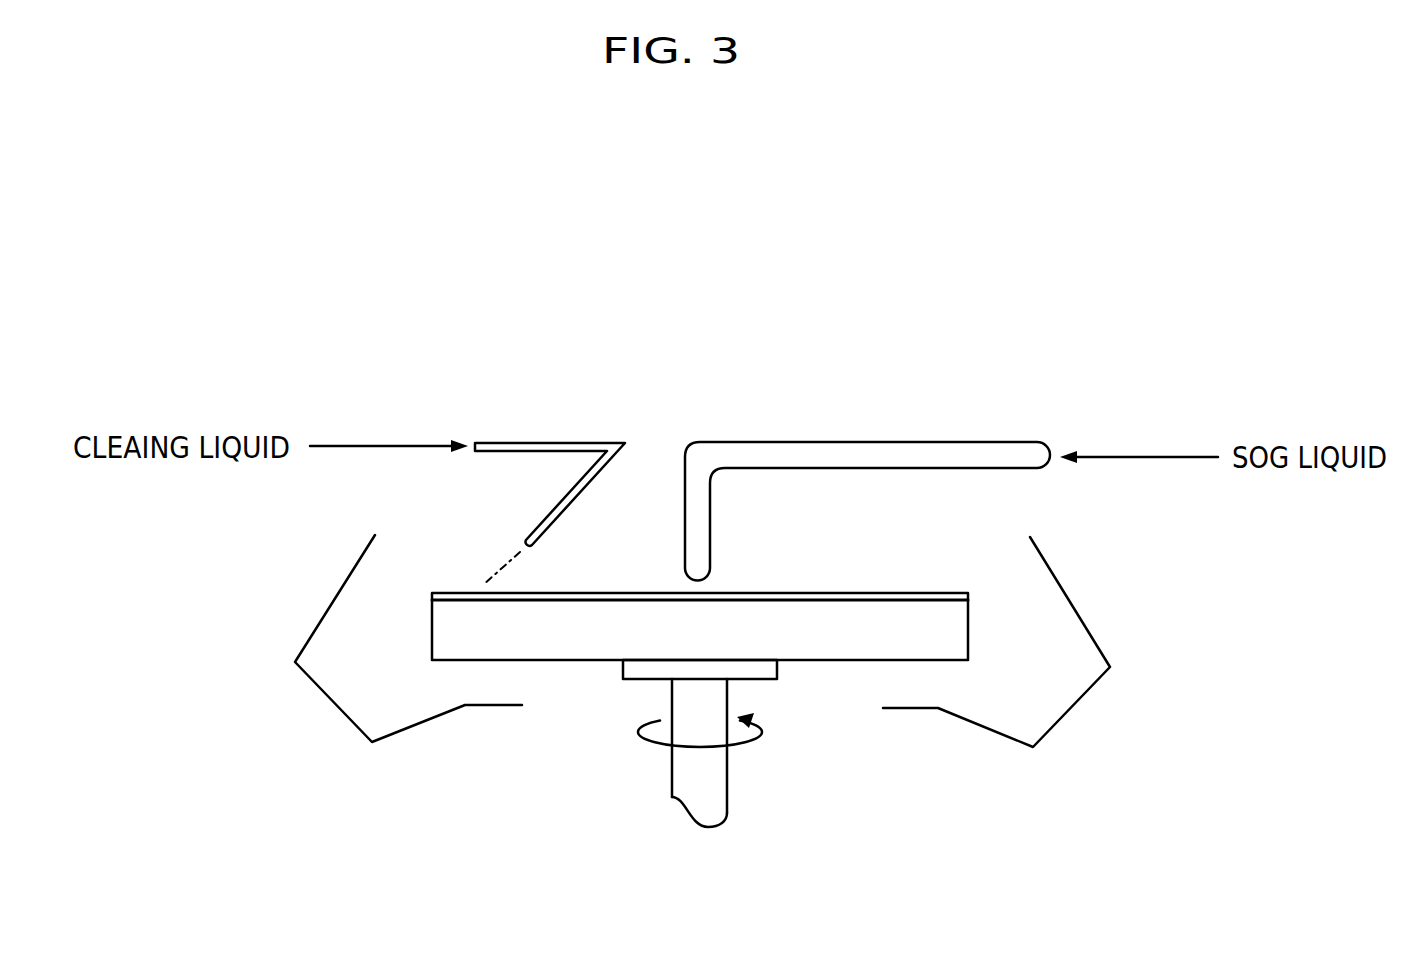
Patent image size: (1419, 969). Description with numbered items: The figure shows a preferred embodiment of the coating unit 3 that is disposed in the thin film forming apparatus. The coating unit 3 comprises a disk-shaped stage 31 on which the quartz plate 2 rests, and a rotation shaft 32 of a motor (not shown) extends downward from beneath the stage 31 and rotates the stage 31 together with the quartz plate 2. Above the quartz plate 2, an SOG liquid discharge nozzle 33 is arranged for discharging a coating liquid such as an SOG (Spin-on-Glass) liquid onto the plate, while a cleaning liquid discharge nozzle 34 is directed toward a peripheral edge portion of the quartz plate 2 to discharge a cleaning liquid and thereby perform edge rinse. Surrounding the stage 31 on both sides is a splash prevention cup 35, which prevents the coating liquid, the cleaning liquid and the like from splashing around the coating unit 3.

The quartz plate 2 is at (597, 593).
The coating unit 3 is at (958, 388).
The disk-shaped stage 31 is at (823, 660).
The rotation shaft 32 is at (672, 783).
The SOG liquid discharge nozzle 33 is at (710, 507).
The cleaning liquid discharge nozzle 34 is at (608, 441).
The splash prevention cup 35 is at (342, 715).